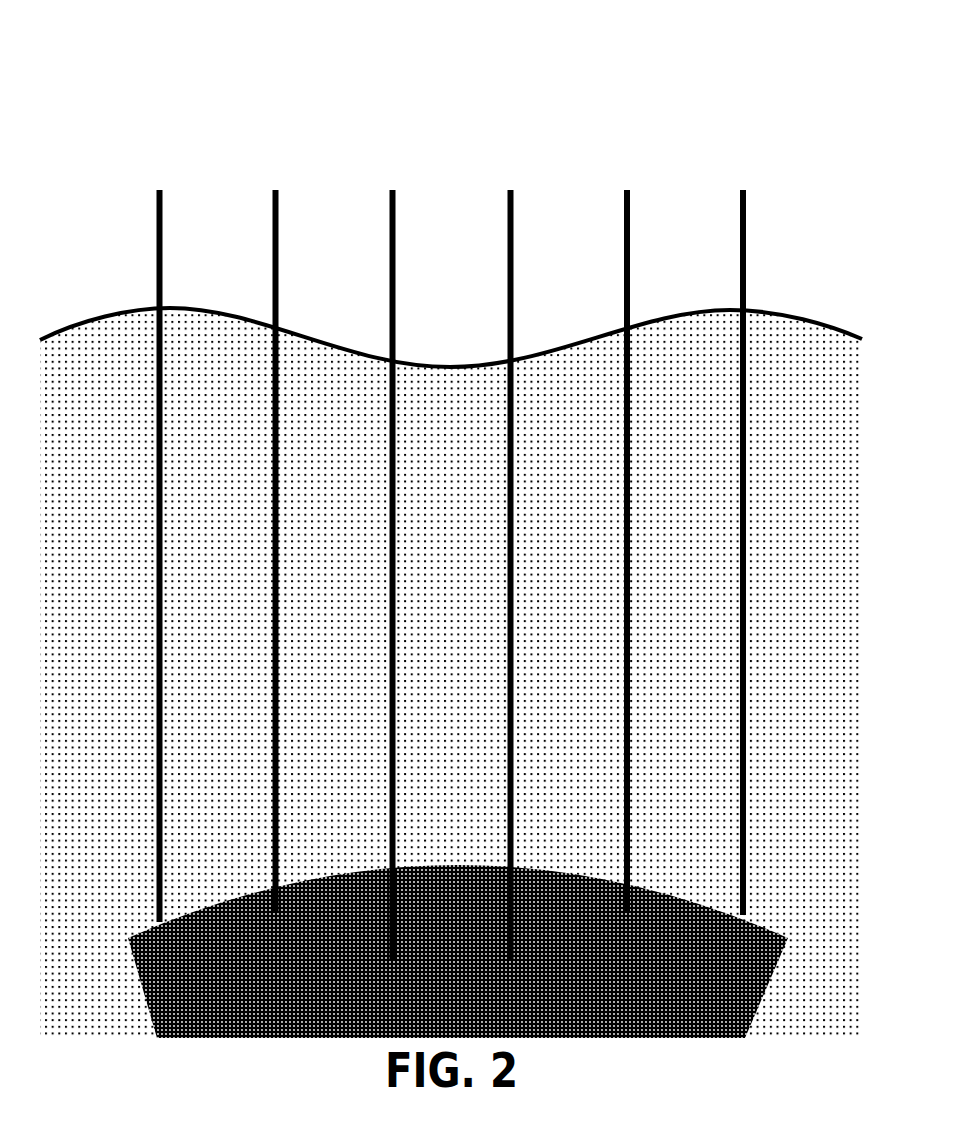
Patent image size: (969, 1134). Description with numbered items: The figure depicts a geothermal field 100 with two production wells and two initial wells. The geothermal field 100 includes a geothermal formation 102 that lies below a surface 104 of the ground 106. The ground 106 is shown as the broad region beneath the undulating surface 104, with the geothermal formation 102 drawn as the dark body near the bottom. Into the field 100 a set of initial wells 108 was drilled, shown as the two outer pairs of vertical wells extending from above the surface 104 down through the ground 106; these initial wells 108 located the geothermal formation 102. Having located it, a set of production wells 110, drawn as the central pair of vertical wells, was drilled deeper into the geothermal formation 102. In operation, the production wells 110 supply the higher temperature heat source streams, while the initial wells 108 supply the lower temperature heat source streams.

The geothermal field 100 is at (359, 92).
The geothermal formation 102 is at (438, 992).
The surface 104 is at (100, 317).
The ground 106 is at (434, 565).
The initial wells 108 is at (272, 253).
The production wells 110 is at (396, 252).